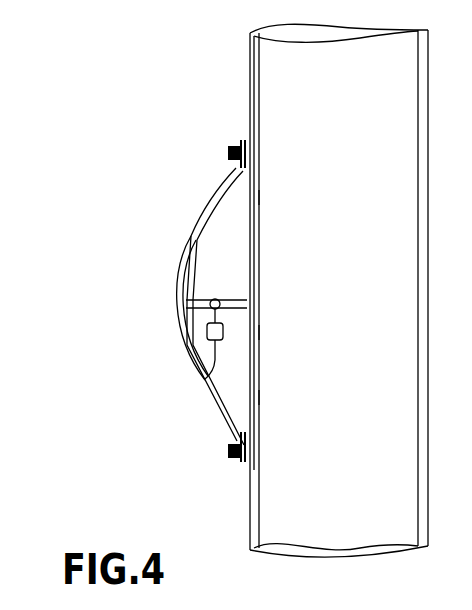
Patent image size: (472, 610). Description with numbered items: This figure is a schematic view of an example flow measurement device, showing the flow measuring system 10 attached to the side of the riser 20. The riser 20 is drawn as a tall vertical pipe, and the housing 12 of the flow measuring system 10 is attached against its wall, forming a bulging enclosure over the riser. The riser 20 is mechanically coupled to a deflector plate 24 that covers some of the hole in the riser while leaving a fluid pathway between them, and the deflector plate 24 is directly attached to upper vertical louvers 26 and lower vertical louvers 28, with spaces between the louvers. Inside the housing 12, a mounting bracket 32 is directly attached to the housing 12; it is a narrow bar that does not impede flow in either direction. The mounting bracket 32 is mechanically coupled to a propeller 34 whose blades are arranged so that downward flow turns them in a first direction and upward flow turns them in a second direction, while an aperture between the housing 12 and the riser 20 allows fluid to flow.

The flow measuring system 10 is at (95, 190).
The housing 12 is at (213, 188).
The riser 20 is at (250, 78).
The deflector plate 24 is at (260, 332).
The upper vertical louvers 26 is at (259, 197).
The lower vertical louvers 28 is at (260, 397).
The mounting bracket 32 is at (202, 384).
The propeller 34 is at (183, 243).